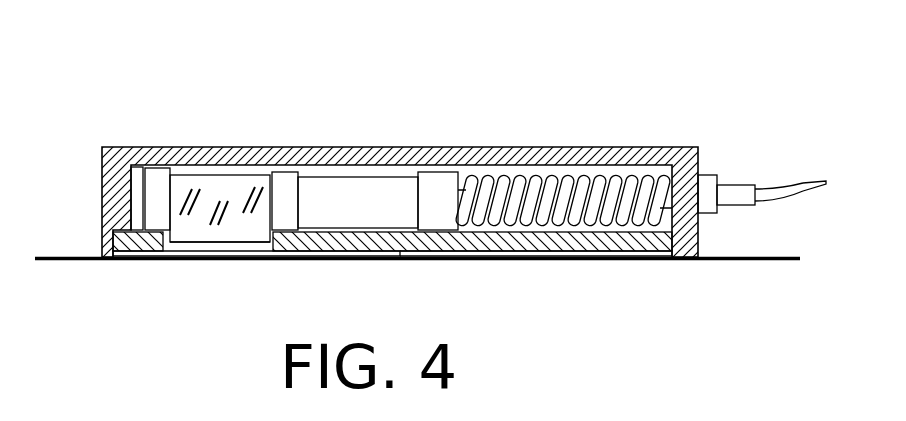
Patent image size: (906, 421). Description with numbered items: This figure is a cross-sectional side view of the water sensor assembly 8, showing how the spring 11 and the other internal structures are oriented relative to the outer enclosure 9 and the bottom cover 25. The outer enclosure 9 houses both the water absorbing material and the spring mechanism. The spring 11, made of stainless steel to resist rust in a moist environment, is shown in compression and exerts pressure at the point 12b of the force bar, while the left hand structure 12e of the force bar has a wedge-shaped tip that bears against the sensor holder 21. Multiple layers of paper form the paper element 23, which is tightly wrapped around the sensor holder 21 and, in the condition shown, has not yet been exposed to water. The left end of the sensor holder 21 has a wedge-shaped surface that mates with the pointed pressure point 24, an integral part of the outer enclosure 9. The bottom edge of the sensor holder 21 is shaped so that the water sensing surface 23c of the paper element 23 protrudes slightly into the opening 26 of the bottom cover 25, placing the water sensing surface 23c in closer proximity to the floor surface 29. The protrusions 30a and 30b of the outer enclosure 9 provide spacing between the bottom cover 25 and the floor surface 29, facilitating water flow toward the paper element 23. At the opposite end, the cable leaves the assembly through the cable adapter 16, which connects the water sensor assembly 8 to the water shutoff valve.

The water sensor assembly 8 is at (82, 90).
The outer enclosure 9 is at (318, 153).
The spring 11 is at (550, 182).
The pressure point of force bar 12b is at (445, 180).
The left hand structure of force bar 12e is at (377, 192).
The cable adapter 16 is at (732, 190).
The sensor holder 21 is at (288, 212).
The paper element 23 is at (215, 188).
The water sensing surface 23c is at (218, 244).
The pressure point 24 is at (142, 181).
The bottom cover 25 is at (548, 247).
The opening of bottom cover 26 is at (195, 248).
The floor surface 29 is at (57, 262).
The protrusion of outer enclosure 30a is at (103, 251).
The protrusion of outer enclosure 30b is at (698, 256).